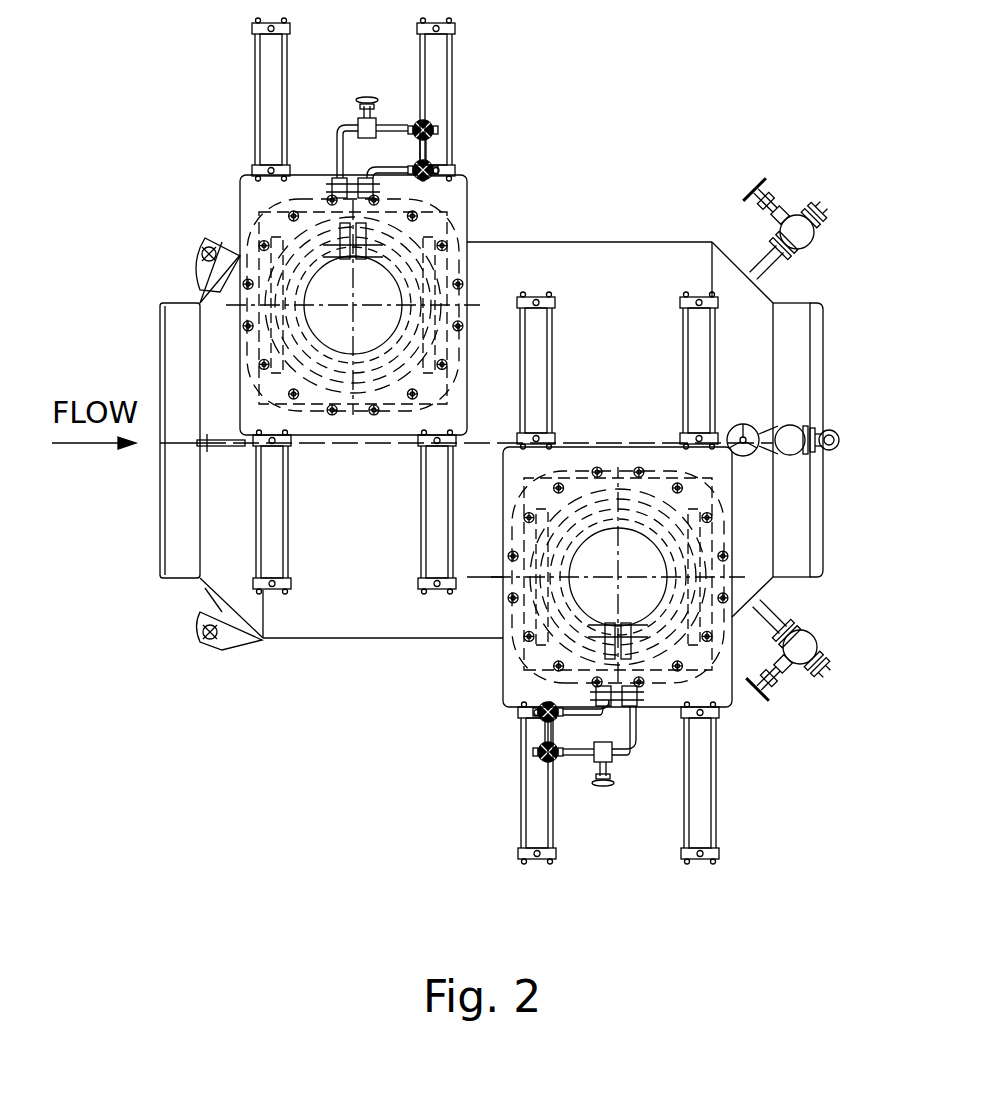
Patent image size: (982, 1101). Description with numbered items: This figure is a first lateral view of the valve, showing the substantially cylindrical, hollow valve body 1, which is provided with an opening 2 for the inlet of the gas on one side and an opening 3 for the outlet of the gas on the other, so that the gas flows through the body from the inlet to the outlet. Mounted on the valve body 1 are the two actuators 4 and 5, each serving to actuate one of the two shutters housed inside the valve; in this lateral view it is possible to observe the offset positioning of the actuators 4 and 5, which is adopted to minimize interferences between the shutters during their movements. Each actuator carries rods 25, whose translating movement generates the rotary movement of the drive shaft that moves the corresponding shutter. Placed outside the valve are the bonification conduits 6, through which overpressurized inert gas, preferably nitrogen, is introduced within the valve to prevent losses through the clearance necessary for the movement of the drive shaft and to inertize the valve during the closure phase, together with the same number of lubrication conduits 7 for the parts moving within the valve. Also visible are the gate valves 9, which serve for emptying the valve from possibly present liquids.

The valve body 1 is at (305, 712).
The opening for the inlet of the gas 2 is at (158, 530).
The opening for the outlet of the gas 3 is at (820, 352).
The actuator 4 is at (248, 198).
The actuator 5 is at (507, 668).
The bonification conduits 6 is at (398, 167).
The lubrication conduits 7 is at (393, 128).
The gate valves 9 is at (807, 242).
The rods 25 is at (258, 75).